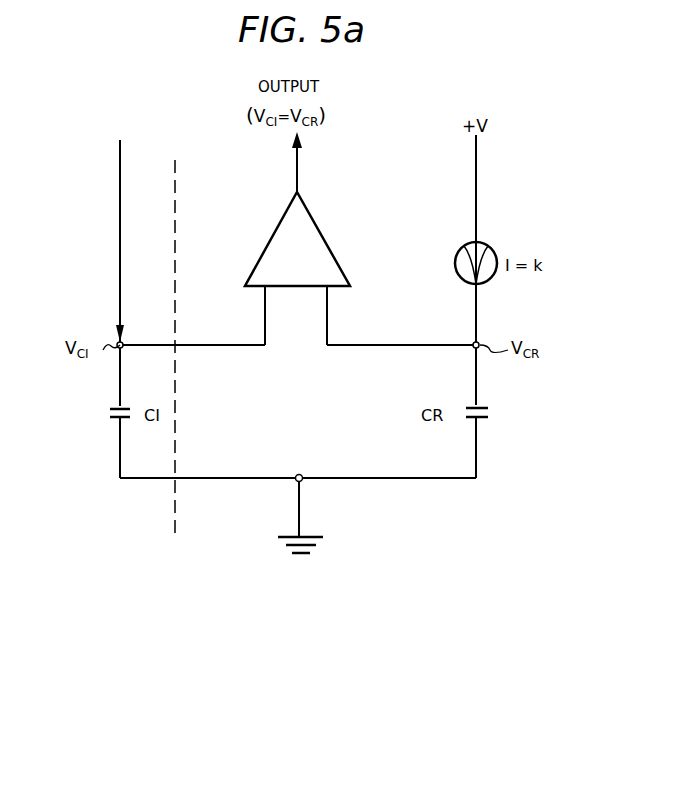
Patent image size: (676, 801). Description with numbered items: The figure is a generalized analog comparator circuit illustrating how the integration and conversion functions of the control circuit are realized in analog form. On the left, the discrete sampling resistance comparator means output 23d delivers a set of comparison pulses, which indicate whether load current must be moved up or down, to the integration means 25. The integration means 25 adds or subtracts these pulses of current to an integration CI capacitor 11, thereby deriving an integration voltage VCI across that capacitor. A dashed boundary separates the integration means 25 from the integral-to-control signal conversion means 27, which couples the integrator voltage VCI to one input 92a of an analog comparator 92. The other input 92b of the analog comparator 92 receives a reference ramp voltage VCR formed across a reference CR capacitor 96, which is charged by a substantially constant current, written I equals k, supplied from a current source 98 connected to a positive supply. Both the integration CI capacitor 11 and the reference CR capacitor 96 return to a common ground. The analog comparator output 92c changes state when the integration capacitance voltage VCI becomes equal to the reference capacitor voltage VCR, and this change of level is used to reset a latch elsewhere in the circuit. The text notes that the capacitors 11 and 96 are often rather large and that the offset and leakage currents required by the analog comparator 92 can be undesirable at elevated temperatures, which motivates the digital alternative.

The integration CI capacitor 11 is at (108, 413).
The discrete sampling resistance comparator means output 23d is at (99, 221).
The integration means 25 is at (140, 527).
The integral-to-control signal conversion means 27 is at (225, 527).
The analog comparator 92 is at (320, 223).
The input of analog comparator 92a is at (263, 312).
The other input of analog comparator 92b is at (329, 313).
The analog comparator output 92c is at (297, 167).
The reference CR capacitor 96 is at (490, 413).
The current source 98 is at (456, 255).